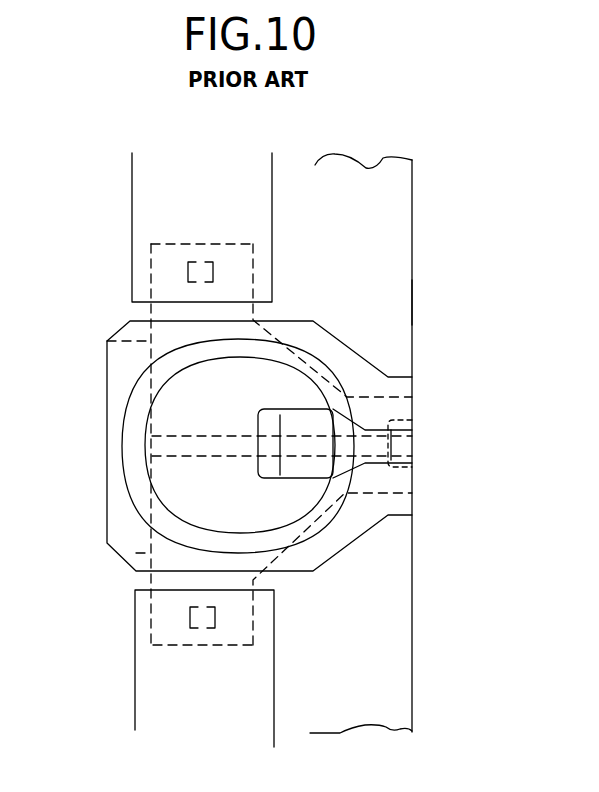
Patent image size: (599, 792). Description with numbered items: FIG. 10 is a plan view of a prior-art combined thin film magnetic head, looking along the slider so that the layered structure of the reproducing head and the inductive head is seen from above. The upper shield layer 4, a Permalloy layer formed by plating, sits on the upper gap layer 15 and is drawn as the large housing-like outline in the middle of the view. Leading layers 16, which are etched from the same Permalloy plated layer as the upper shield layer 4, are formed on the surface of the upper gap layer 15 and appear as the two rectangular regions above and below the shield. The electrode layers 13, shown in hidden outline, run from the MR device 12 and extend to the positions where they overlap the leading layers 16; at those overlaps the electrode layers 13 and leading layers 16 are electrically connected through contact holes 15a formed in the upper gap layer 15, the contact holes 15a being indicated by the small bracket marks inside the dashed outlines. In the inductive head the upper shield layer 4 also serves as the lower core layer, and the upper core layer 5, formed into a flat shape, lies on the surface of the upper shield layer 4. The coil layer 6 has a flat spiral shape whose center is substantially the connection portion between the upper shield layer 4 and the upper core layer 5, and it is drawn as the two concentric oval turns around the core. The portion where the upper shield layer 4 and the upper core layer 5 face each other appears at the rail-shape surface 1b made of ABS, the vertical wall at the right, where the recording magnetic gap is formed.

The rail-shape surface 1b is at (412, 298).
The upper shield layer 4 is at (358, 378).
The upper core layer 5 is at (310, 467).
The coil layer 6 is at (147, 479).
The MR device 12 is at (415, 483).
The electrode layer 13 is at (107, 342).
The upper gap layer 15 is at (378, 233).
The contact hole 15a is at (188, 272).
The leading layer 16 is at (157, 212).